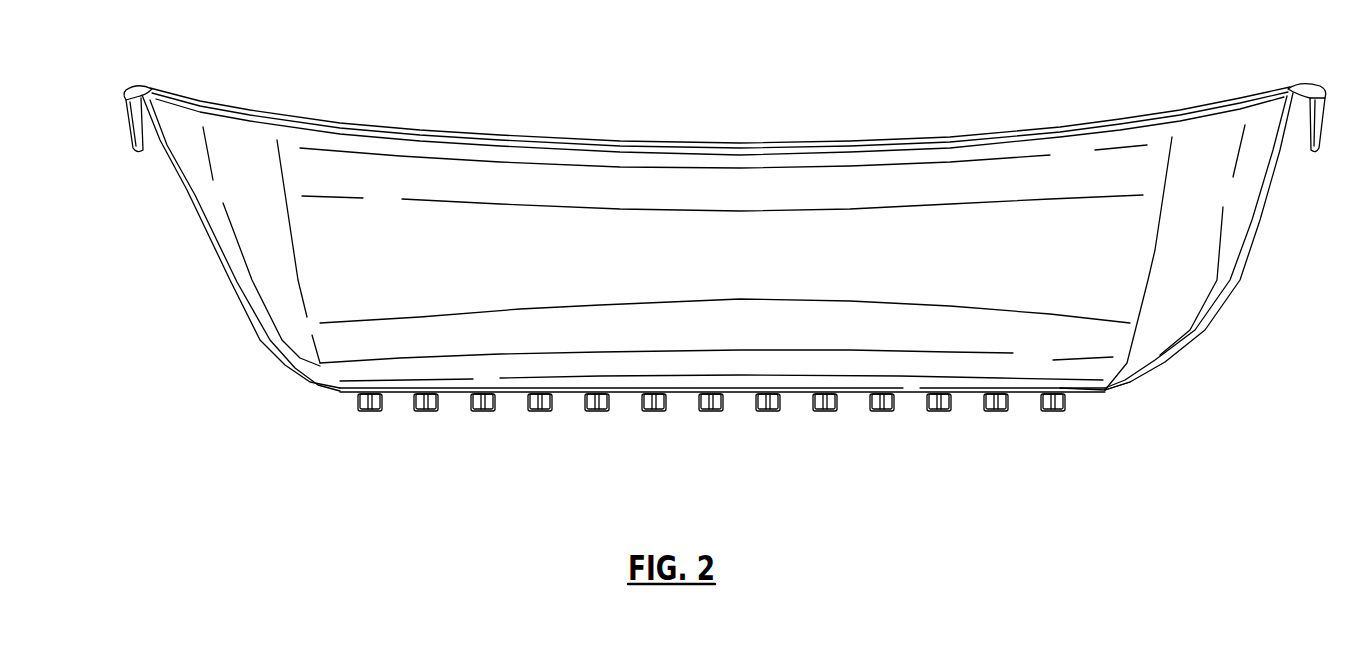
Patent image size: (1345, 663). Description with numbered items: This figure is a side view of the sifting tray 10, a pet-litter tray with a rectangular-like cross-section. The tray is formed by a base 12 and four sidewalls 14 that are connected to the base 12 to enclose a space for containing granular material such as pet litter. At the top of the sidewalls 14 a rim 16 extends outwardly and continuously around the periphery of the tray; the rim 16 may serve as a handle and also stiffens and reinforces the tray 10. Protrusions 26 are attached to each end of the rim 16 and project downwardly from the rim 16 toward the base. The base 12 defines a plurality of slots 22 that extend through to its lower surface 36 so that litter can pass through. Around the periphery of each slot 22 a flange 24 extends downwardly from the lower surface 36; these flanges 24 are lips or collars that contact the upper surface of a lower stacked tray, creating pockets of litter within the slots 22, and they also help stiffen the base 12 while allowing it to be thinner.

The sifting tray 10 is at (731, 54).
The base 12 is at (1100, 393).
The sidewalls 14 is at (1235, 260).
The rim 16 is at (185, 117).
The slots 22 is at (942, 412).
The flange 24 is at (355, 395).
The protrusions 26 is at (128, 120).
The lower surface 36 is at (568, 393).